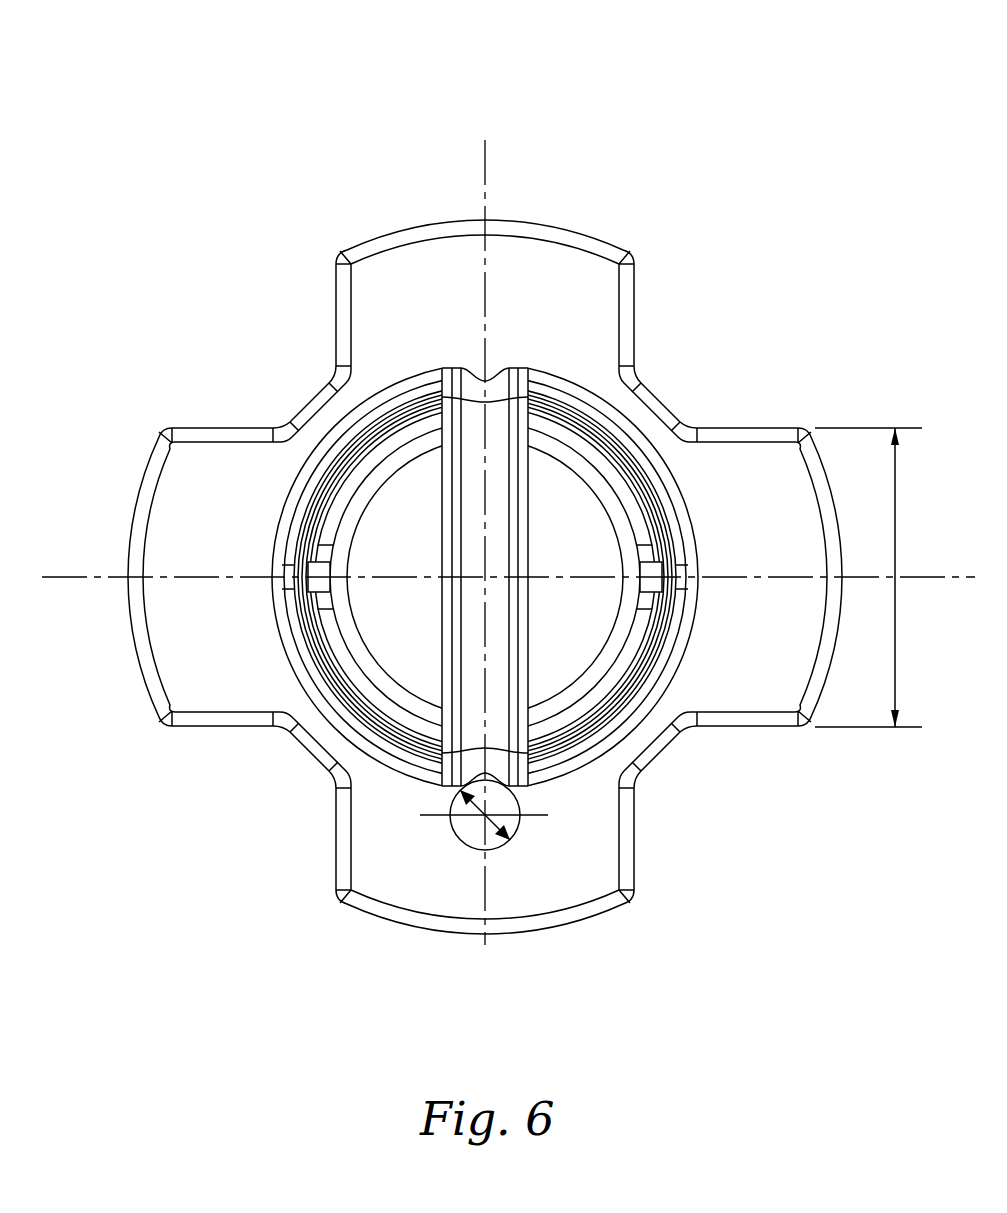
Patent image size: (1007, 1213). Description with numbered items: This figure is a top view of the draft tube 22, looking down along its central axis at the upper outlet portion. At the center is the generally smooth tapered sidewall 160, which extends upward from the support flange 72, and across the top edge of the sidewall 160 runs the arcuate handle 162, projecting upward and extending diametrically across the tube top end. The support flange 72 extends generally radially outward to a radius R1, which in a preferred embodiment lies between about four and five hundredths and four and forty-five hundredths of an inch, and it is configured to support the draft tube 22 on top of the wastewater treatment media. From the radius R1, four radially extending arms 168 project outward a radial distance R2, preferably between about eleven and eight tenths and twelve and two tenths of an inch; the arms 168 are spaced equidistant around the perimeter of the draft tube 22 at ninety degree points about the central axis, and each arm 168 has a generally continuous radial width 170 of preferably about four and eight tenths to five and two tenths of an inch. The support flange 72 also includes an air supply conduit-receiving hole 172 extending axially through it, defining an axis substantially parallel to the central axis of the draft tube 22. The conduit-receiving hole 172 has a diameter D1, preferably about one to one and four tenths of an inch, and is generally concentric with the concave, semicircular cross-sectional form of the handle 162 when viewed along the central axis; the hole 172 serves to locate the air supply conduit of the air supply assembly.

The draft tube 22 is at (655, 118).
The support flange 72 is at (560, 230).
The tapered sidewall 160 is at (292, 661).
The arcuate handle 162 is at (530, 487).
The radially extending arms 168 is at (581, 278).
The radial width 170 is at (896, 528).
The air supply conduit-receiving hole 172 is at (518, 827).
The radius R1 is at (297, 386).
The radial distance R2 is at (393, 218).
The diameter D1 is at (487, 818).